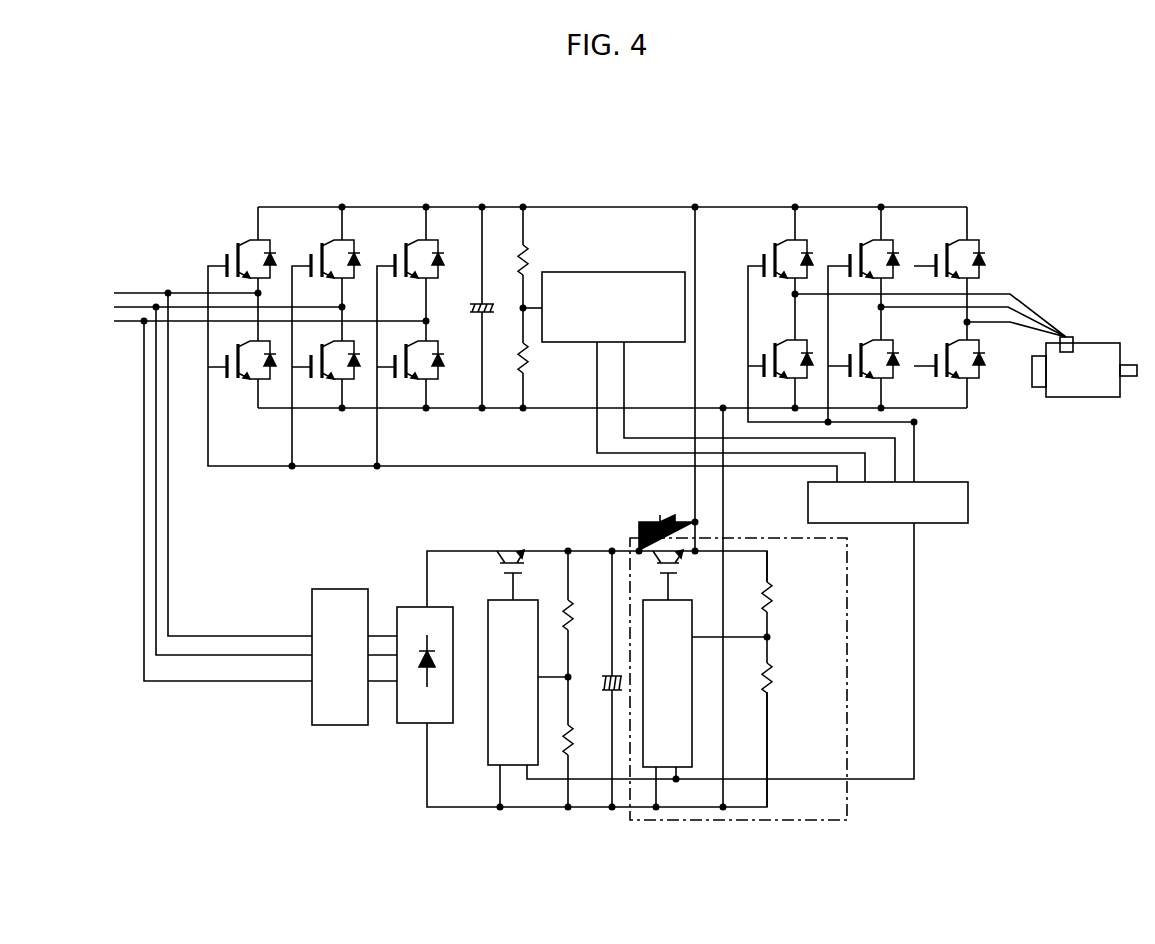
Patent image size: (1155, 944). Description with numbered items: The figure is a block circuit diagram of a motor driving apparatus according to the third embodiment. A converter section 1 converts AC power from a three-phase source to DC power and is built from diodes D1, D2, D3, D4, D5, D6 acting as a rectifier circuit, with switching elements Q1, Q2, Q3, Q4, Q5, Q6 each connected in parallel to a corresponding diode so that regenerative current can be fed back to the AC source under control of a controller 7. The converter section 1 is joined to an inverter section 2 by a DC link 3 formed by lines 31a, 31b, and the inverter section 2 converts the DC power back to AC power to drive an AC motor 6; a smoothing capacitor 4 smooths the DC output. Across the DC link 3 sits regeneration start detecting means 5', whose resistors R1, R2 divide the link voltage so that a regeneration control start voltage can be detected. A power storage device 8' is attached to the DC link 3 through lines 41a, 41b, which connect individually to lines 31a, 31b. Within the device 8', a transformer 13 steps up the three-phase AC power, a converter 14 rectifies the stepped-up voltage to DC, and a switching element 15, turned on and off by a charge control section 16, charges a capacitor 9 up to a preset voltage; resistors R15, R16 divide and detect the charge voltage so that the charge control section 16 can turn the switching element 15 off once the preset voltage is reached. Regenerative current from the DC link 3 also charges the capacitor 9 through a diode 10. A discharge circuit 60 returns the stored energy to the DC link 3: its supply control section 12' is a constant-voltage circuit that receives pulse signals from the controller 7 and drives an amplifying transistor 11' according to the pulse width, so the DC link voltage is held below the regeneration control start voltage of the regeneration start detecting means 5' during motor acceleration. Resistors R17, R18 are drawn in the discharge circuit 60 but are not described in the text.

The converter section 1 is at (307, 141).
The inverter section 2 is at (865, 195).
The DC link 3 is at (667, 184).
The line of the DC link 31a is at (622, 207).
The line of the DC link 31b is at (673, 407).
The smoothing capacitor 4 is at (486, 309).
The regeneration start detecting means 5' is at (718, 361).
The AC motor 6 is at (1108, 353).
The controller 7 is at (940, 482).
The power storage device 8' is at (557, 714).
The capacitor 9 is at (615, 693).
The diode 10 is at (655, 514).
The transistor 11' is at (683, 575).
The supply control section 12' is at (705, 733).
The transformer 13 is at (346, 727).
The converter 14 is at (418, 725).
The switching element 15 is at (496, 556).
The charge control section 16 is at (488, 728).
The line of the power storage device 41a is at (695, 488).
The line of the power storage device 41b is at (725, 496).
The discharge circuit 60 is at (806, 822).
The switching element Q1 is at (231, 250).
The switching element Q2 is at (316, 246).
The switching element Q3 is at (400, 249).
The switching element Q4 is at (246, 386).
The switching element Q5 is at (321, 386).
The switching element Q6 is at (406, 386).
The diode D1 is at (281, 254).
The diode D2 is at (363, 253).
The diode D3 is at (448, 255).
The diode D4 is at (273, 376).
The diode D5 is at (357, 376).
The diode D6 is at (441, 376).
The resistor R1 is at (542, 257).
The resistor R2 is at (544, 358).
The resistor R15 is at (585, 614).
The resistor R16 is at (586, 742).
The resistor R17 is at (790, 594).
The resistor R18 is at (790, 722).